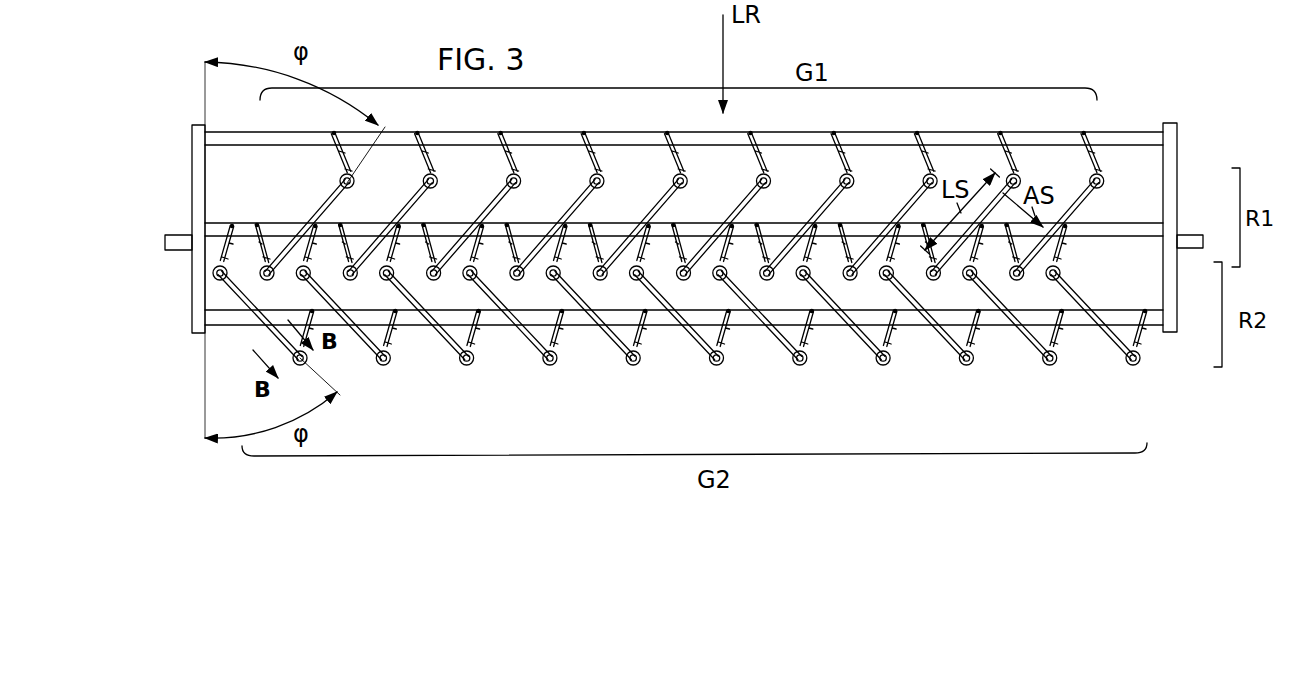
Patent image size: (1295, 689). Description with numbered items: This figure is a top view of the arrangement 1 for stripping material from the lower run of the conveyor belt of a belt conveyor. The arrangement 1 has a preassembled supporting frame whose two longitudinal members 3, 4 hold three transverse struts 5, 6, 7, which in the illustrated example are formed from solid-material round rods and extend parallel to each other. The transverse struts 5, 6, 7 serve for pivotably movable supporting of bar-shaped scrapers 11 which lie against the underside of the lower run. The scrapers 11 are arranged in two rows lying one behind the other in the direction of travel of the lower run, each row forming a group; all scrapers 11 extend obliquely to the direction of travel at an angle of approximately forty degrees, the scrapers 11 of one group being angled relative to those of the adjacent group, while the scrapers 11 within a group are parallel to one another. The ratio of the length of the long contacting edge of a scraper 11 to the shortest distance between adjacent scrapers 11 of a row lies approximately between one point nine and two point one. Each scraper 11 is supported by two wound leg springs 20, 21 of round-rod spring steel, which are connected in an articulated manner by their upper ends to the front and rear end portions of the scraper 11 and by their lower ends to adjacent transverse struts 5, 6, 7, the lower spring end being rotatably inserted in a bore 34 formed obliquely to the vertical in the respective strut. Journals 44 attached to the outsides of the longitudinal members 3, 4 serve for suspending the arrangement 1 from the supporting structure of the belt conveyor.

The arrangement for stripping material 1 is at (1187, 107).
The longitudinal member 3 is at (1170, 157).
The longitudinal member 4 is at (193, 180).
The transverse strut 5 is at (1148, 135).
The transverse strut 6 is at (1142, 223).
The transverse strut 7 is at (1157, 322).
The scraper 11 is at (395, 210).
The wound leg spring 20 is at (335, 138).
The wound leg spring 21 is at (1062, 248).
The bore 34 is at (1085, 135).
The journal 44 is at (175, 247).